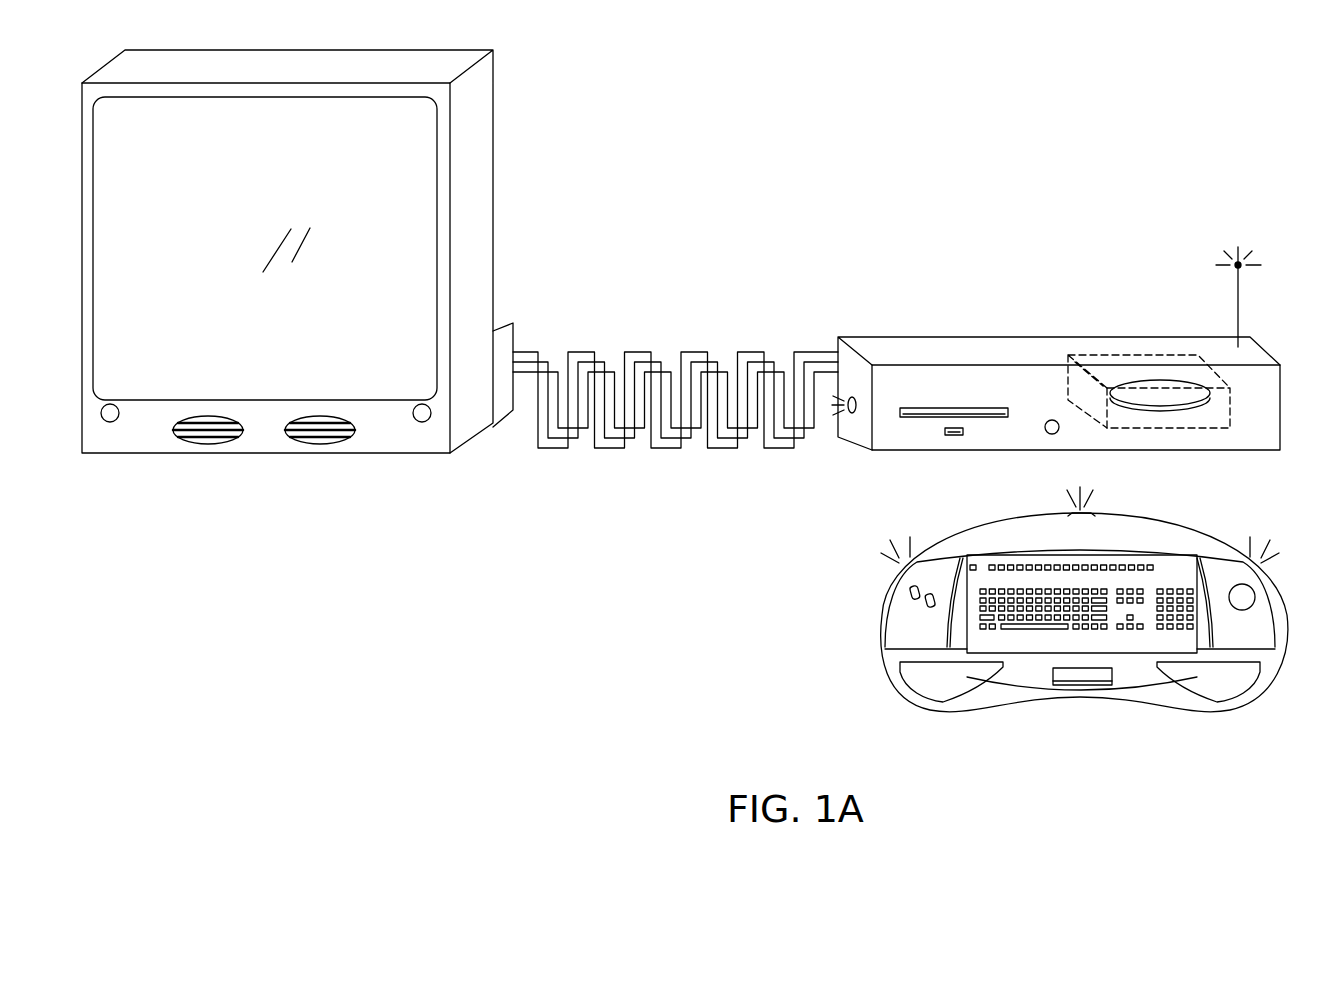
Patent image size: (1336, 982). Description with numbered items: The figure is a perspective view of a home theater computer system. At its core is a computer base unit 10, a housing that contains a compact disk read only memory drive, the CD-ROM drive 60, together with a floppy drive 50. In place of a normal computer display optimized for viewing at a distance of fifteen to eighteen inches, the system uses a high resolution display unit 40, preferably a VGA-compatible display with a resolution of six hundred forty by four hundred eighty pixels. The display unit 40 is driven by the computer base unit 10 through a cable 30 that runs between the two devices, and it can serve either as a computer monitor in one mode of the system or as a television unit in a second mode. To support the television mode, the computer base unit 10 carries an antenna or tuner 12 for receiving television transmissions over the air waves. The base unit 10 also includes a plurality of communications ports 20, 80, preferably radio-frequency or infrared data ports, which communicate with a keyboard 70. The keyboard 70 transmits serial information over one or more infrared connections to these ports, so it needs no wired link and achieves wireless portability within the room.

The computer base unit 10 is at (1281, 415).
The antenna or tuner 12 is at (1239, 305).
The communications port 20 is at (852, 415).
The cable 30 is at (698, 362).
The display unit 40 is at (487, 255).
The floppy drive 50 is at (953, 437).
The CD-ROM drive 60 is at (1163, 417).
The keyboard 70 is at (882, 636).
The communications port 80 is at (1052, 435).